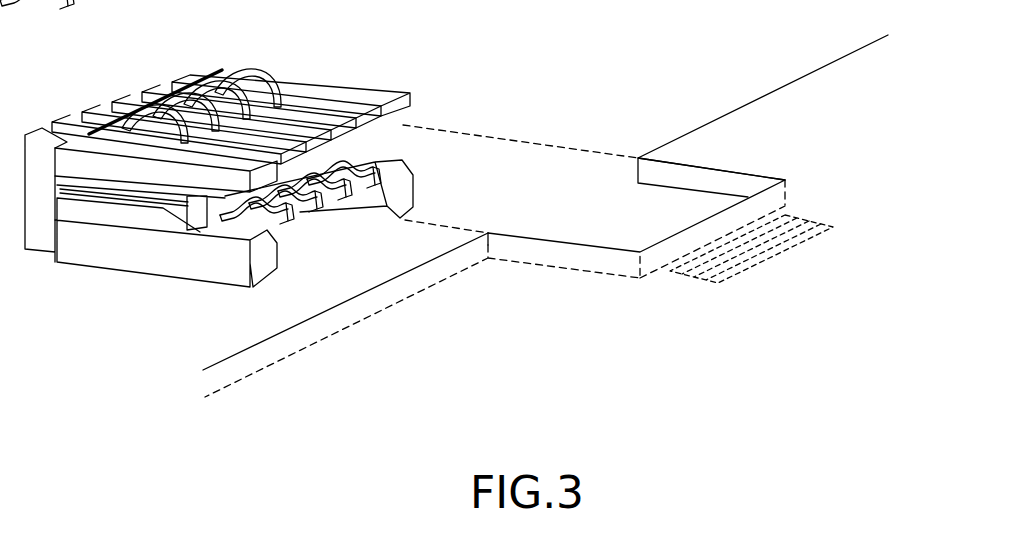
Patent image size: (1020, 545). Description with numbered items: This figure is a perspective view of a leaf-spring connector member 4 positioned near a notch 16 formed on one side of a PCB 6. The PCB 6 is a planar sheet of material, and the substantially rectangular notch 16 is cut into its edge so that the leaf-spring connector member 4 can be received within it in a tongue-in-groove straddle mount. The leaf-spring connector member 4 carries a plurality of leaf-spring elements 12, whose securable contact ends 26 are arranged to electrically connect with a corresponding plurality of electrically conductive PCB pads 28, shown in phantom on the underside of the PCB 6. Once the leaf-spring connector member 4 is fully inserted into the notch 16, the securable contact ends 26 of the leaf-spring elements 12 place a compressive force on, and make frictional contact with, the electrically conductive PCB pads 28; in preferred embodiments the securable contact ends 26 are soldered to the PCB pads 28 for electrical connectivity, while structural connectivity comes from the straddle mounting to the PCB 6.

The leaf-spring connector member 4 is at (206, 185).
The PCB 6 is at (504, 307).
The leaf-spring elements 12 is at (279, 90).
The notch 16 is at (627, 216).
The securable contact ends 26 is at (290, 216).
The electrically conductive PCB pads 28 is at (718, 282).